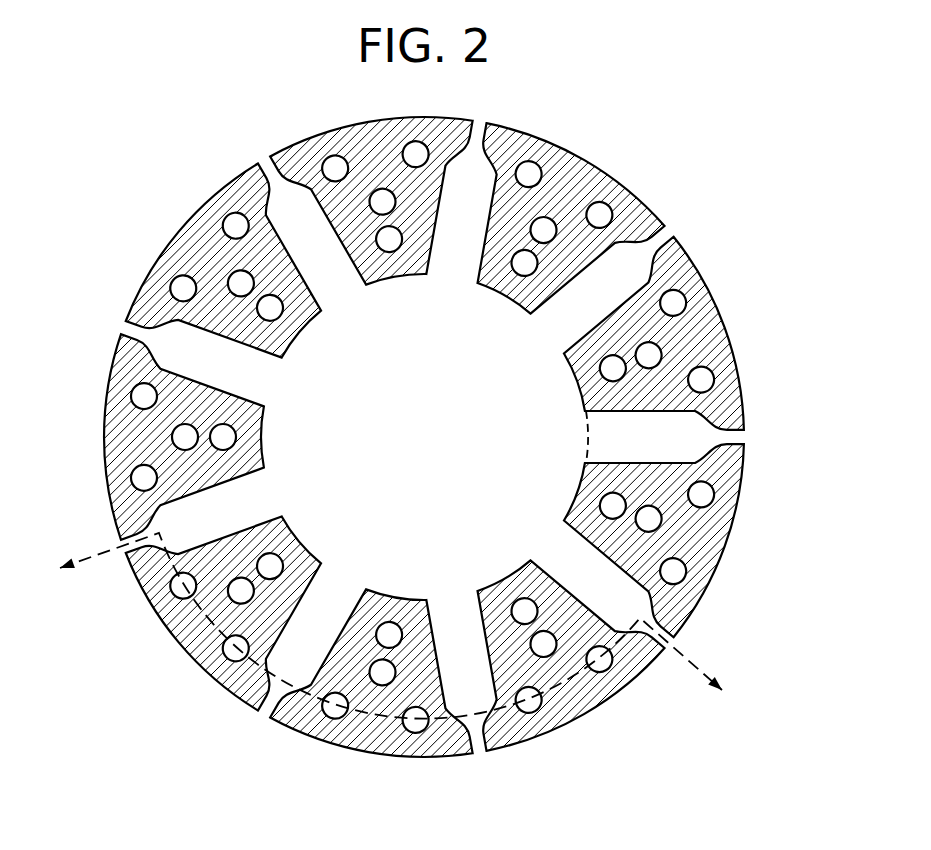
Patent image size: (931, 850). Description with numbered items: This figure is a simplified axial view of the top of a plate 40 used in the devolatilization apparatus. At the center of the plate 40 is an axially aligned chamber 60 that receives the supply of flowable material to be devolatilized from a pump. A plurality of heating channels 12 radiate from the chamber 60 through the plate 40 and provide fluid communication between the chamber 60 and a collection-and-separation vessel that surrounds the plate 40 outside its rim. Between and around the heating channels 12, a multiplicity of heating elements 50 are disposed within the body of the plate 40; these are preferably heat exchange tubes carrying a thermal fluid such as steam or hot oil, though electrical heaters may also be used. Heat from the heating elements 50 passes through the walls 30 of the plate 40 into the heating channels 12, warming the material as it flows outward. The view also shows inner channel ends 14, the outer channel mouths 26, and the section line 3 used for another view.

The heating channel 12 is at (329, 253).
The slot inner end at central opening 14 is at (570, 435).
The slot mouth opening 26 is at (743, 442).
The wall 30 is at (352, 608).
The plate 40 is at (387, 161).
The heating element 50 is at (698, 380).
The axially aligned chamber 60 is at (450, 433).
The section line 3- 3 is at (392, 623).